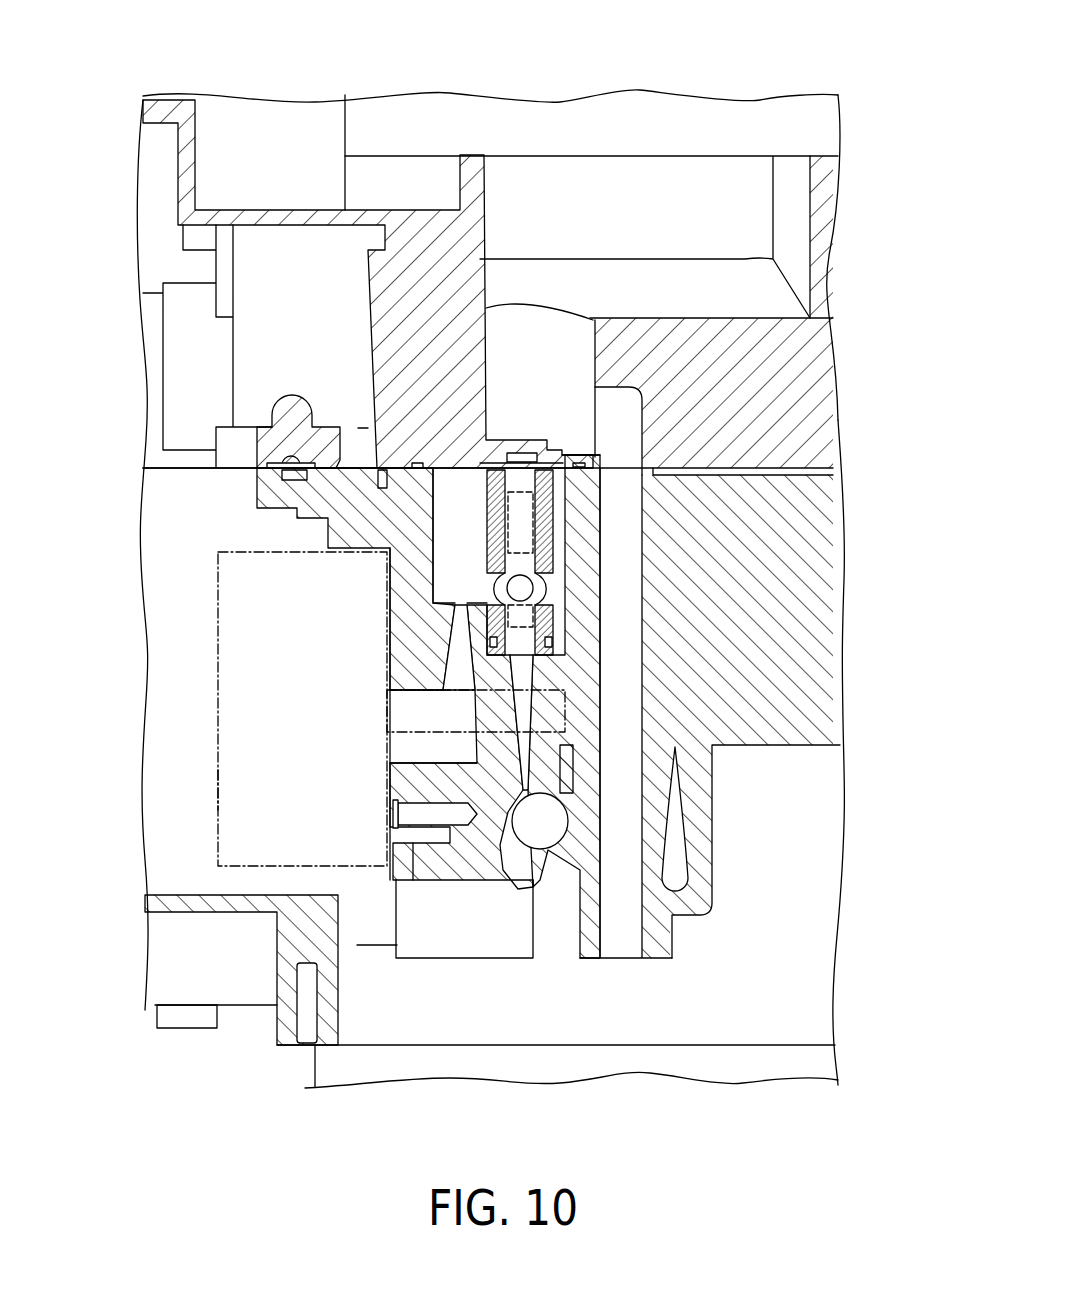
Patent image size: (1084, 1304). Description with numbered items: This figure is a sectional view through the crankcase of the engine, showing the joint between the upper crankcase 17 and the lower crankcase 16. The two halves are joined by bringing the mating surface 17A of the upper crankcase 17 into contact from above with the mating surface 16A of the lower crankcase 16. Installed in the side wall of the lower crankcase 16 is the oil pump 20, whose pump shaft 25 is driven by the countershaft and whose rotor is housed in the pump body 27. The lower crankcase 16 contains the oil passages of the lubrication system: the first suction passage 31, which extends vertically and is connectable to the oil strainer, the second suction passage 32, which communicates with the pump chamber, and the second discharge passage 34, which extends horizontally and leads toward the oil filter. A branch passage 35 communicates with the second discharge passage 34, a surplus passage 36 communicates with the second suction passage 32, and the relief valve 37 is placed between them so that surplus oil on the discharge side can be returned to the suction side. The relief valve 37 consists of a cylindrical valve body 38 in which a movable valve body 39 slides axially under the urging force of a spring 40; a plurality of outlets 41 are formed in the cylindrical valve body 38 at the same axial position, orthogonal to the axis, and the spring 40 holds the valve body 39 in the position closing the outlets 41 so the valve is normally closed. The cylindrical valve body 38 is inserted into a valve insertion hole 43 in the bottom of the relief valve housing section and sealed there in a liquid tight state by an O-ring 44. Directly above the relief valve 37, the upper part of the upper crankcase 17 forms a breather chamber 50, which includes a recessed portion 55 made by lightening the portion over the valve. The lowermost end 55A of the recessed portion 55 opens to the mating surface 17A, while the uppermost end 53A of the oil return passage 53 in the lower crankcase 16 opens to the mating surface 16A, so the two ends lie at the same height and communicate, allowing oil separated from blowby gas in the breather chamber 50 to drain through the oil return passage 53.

The lower crankcase 16 is at (815, 938).
The mating surface of the lower crankcase 16A is at (158, 468).
The upper crankcase 17 is at (838, 275).
The mating surface of the upper crankcase 17A is at (176, 469).
The oil pump 20 is at (206, 658).
The pump shaft 25 is at (560, 712).
The pump body 27 is at (218, 790).
The first suction passage 31 is at (472, 930).
The second suction passage 32 is at (446, 745).
The second discharge passage 34 is at (541, 828).
The branch passage 35 is at (560, 778).
The surplus passage 36 is at (433, 523).
The relief valve 37 is at (560, 496).
The valve body (cylindrical) 38 is at (567, 516).
The valve body (movable) 39 is at (555, 567).
The spring 40 is at (553, 537).
The outlets 41 is at (543, 588).
The valve insertion hole 43 is at (555, 618).
The O-ring 44 is at (553, 642).
The breather chamber 50 is at (692, 208).
The oil return passage 53 is at (650, 860).
The uppermost end of the oil return passage 53A is at (652, 493).
The recessed portion 55 is at (546, 373).
The lowermost end of the recessed portion 55A is at (655, 475).